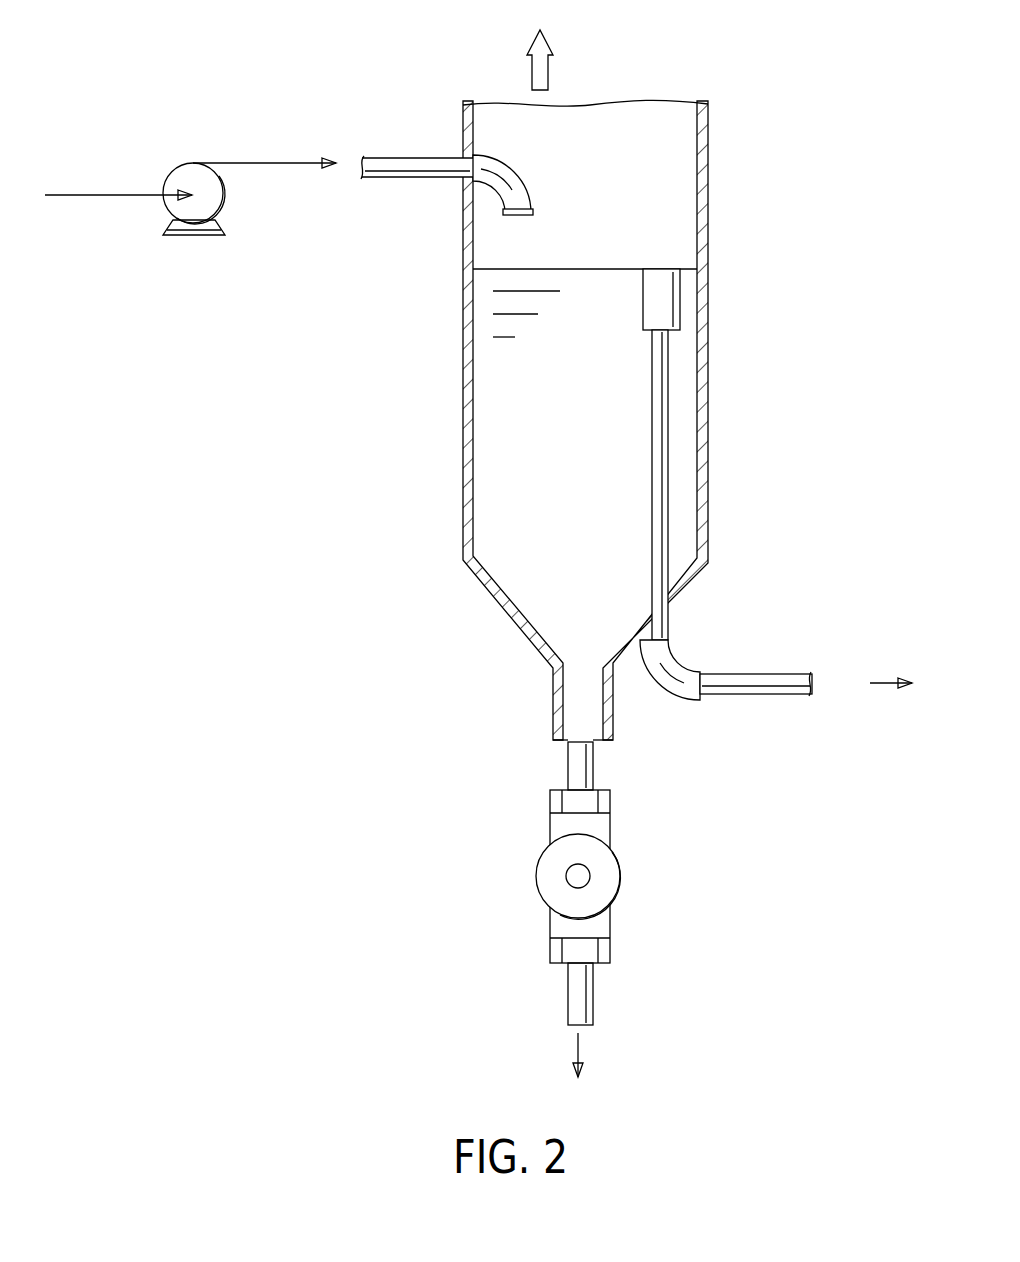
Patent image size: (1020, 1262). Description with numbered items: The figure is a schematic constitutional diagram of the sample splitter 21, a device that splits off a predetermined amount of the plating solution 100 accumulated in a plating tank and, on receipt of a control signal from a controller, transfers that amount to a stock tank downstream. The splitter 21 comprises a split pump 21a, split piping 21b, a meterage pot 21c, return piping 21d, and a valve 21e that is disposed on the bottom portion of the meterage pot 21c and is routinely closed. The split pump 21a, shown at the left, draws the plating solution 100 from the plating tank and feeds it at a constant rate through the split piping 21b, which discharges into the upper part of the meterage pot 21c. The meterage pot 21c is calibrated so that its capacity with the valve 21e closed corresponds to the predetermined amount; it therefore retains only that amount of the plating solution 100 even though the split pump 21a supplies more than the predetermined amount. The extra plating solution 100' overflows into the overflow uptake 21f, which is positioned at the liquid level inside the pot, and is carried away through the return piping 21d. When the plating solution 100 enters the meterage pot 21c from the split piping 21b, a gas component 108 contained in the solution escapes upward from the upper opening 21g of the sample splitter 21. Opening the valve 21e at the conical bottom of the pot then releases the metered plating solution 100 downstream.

The sample splitter 21 is at (790, 421).
The split pump 21a is at (225, 195).
The split piping 21b is at (400, 156).
The meterage pot 21c is at (463, 452).
The return piping 21d is at (725, 673).
The valve 21e is at (612, 827).
The overflow uptake 21f is at (662, 280).
The upper opening 21g is at (617, 120).
The plating solution 100 is at (314, 607).
The extra plating solution 100' is at (868, 685).
The gas component 108 is at (540, 45).